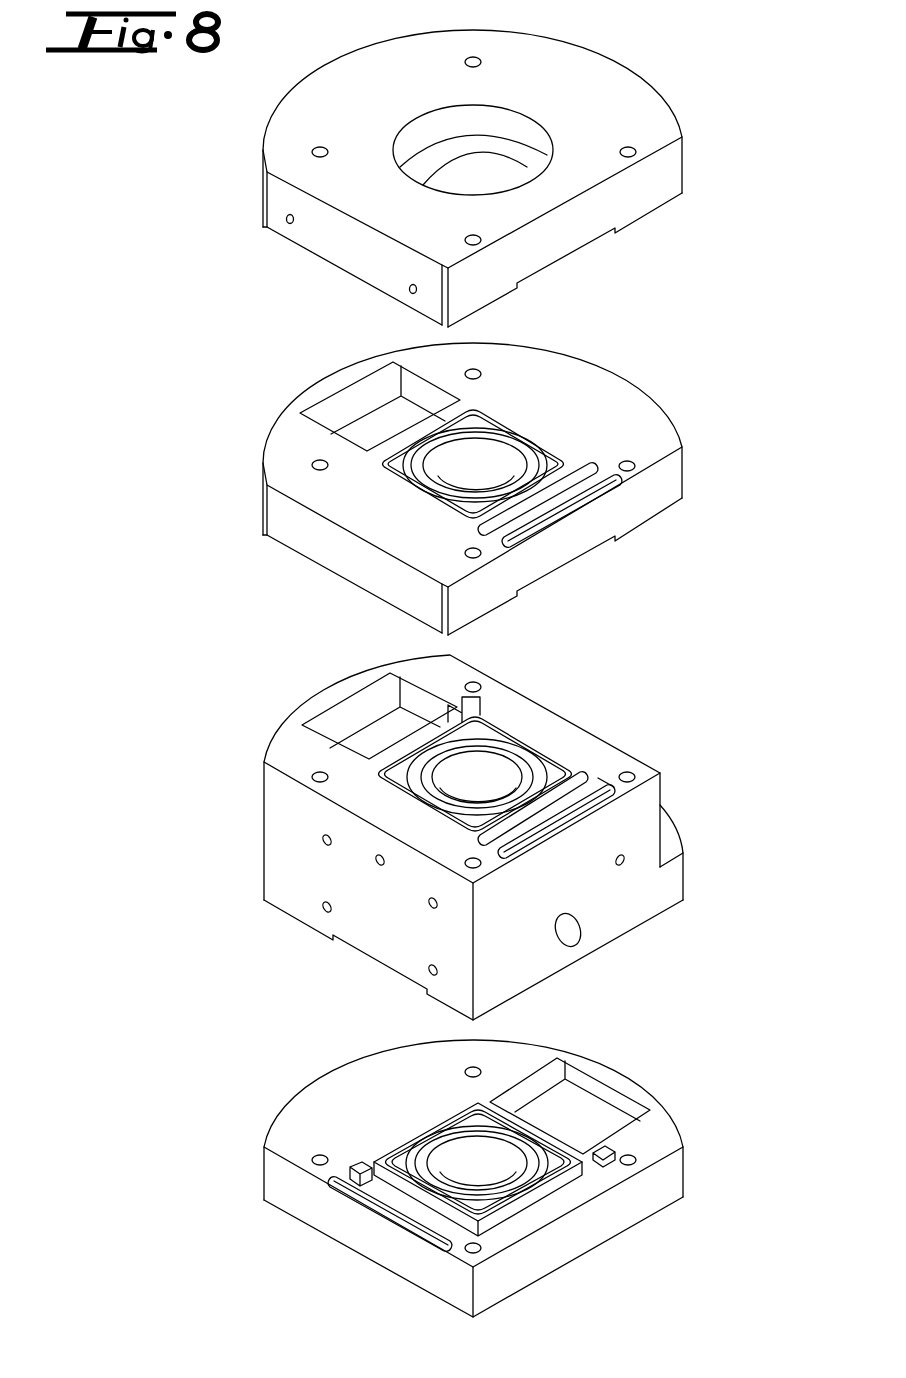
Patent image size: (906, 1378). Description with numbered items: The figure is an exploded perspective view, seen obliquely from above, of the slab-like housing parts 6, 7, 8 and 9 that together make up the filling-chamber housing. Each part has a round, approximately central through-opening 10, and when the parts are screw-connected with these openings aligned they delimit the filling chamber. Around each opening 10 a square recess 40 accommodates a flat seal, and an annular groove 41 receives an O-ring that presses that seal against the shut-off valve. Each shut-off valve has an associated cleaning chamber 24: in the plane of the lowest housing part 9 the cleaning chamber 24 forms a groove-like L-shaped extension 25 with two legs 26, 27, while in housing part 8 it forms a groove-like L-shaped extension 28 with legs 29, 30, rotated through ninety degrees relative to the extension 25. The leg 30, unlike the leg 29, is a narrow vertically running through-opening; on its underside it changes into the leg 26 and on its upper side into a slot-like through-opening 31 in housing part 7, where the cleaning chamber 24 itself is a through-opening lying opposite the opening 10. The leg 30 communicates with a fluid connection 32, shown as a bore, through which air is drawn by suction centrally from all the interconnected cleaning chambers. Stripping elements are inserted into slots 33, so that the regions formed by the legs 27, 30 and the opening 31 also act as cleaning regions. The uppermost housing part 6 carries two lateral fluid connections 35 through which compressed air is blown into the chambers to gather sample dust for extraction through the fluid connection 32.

The housing part 6 is at (228, 130).
The housing part 7 is at (228, 433).
The housing part 8 is at (228, 776).
The housing part 9 is at (228, 1136).
The through-opening 10 is at (494, 182).
The cleaning chamber 24 is at (333, 413).
The L-shaped extension 25 is at (493, 1225).
The leg 26 is at (543, 1197).
The leg 27 is at (347, 1175).
The L-shaped extension 28 is at (595, 786).
The leg 29 is at (518, 728).
The leg 30 is at (567, 792).
The slot-like through-opening 31 is at (600, 470).
The fluid connection 32 is at (572, 931).
The slot 33 is at (583, 500).
The fluid connection 35 is at (288, 222).
The recess 40 is at (560, 462).
The annular groove 41 is at (405, 476).